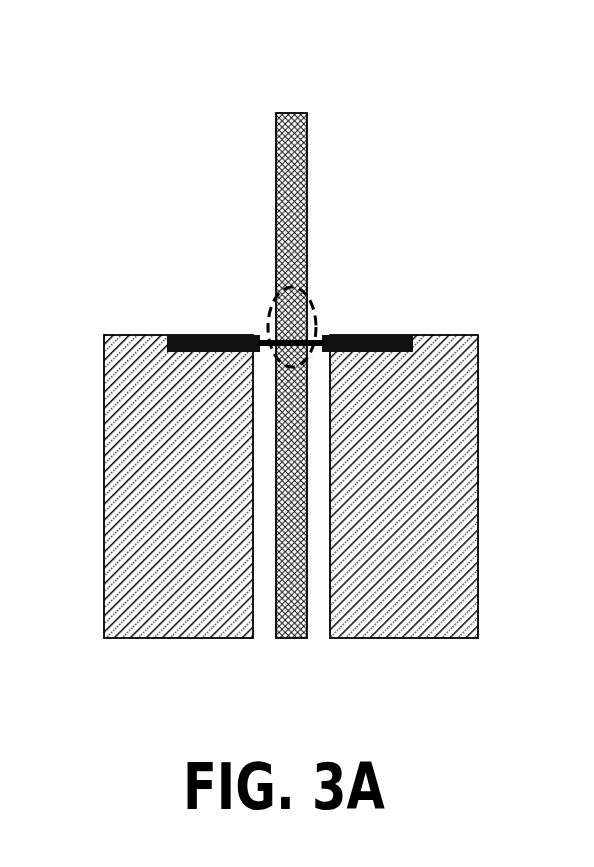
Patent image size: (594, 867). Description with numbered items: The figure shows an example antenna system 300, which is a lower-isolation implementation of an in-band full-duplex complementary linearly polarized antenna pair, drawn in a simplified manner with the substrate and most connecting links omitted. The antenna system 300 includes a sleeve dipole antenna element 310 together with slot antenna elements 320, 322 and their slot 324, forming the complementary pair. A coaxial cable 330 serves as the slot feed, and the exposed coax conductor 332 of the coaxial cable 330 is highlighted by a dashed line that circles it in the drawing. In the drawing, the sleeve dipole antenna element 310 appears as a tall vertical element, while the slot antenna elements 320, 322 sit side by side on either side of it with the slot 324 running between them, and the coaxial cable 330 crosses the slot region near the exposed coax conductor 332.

The antenna system 300 is at (158, 68).
The sleeve dipole antenna element 310 is at (300, 153).
The slot antenna element 320 is at (179, 618).
The slot antenna element 322 is at (393, 618).
The slot 324 is at (263, 632).
The coaxial cable 330 is at (363, 340).
The exposed coax conductor 332 is at (295, 303).